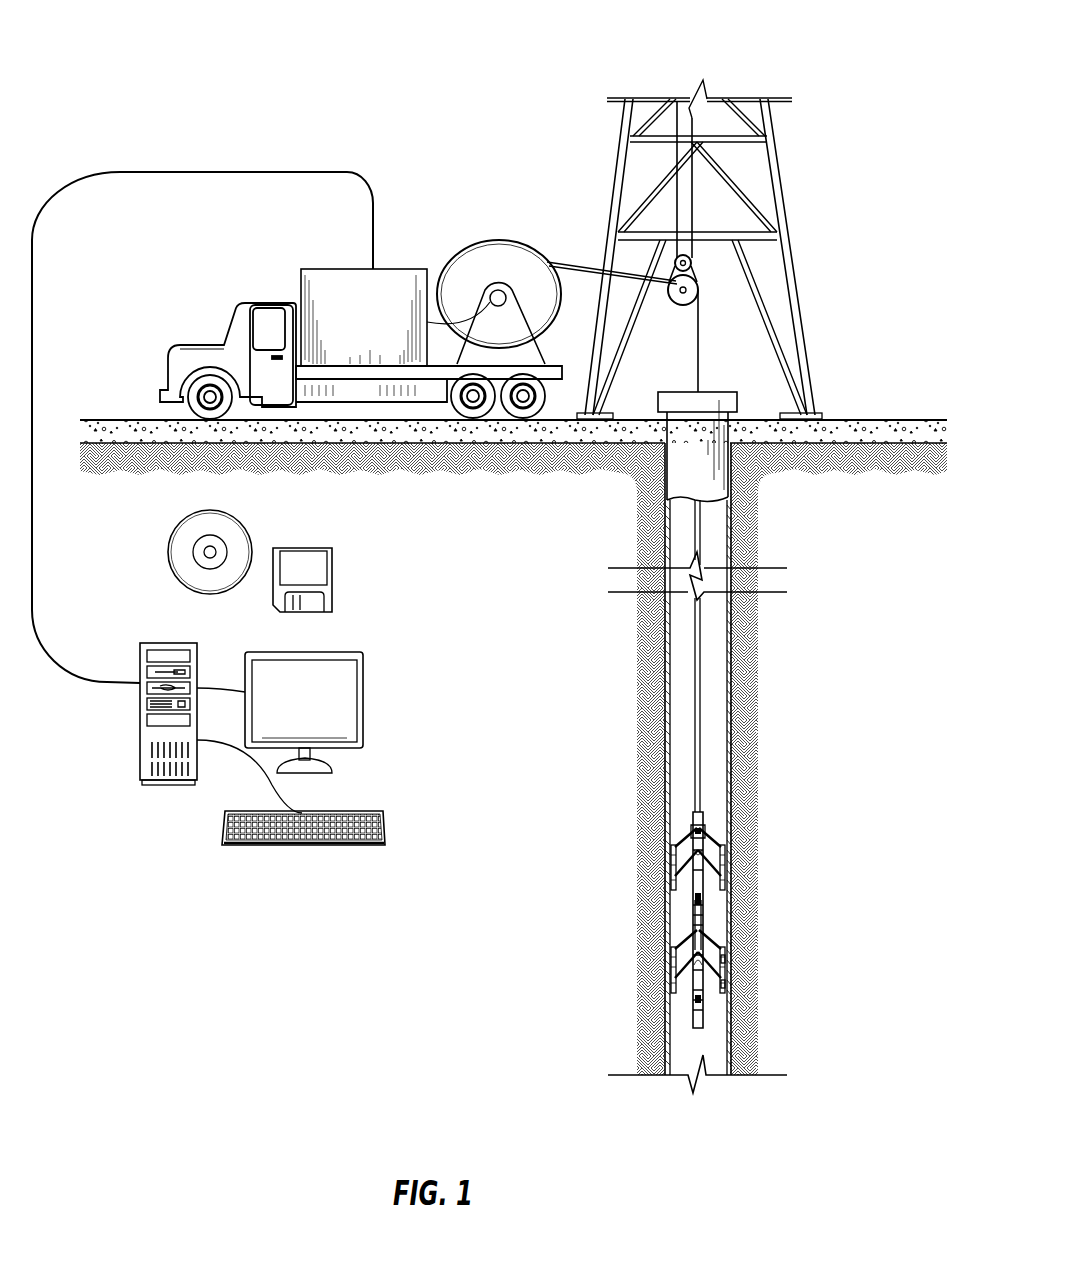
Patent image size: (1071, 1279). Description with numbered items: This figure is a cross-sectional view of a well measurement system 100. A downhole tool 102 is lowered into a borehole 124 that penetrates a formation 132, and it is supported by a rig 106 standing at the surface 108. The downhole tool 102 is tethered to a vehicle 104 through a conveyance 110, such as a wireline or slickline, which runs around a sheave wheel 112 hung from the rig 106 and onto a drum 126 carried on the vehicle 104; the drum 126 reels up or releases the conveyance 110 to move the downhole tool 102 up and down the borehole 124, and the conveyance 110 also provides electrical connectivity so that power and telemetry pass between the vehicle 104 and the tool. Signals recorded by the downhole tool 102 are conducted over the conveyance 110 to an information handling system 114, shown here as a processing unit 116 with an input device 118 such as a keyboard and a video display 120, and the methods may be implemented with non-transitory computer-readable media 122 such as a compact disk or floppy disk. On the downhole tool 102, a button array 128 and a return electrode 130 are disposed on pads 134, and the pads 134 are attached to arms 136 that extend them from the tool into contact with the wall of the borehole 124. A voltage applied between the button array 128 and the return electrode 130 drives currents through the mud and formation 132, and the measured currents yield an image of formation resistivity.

The well measurement system 100 is at (206, 50).
The downhole tool 102 is at (665, 878).
The vehicle 104 is at (318, 268).
The rig 106 is at (778, 160).
The surface 108 is at (871, 420).
The conveyance 110 is at (692, 665).
The sheave wheel 112 is at (680, 305).
The information handling system 114 is at (181, 862).
The processing unit 116 is at (172, 643).
The input device 118 is at (385, 824).
The video display 120 is at (363, 695).
The non-transitory computer-readable media 122 is at (252, 535).
The borehole 124 is at (720, 543).
The drum 126 is at (484, 240).
The button array 128 is at (724, 958).
The return electrode 130 is at (722, 985).
The formation 132 is at (898, 670).
The pad 134 is at (724, 875).
The arm 136 is at (715, 935).